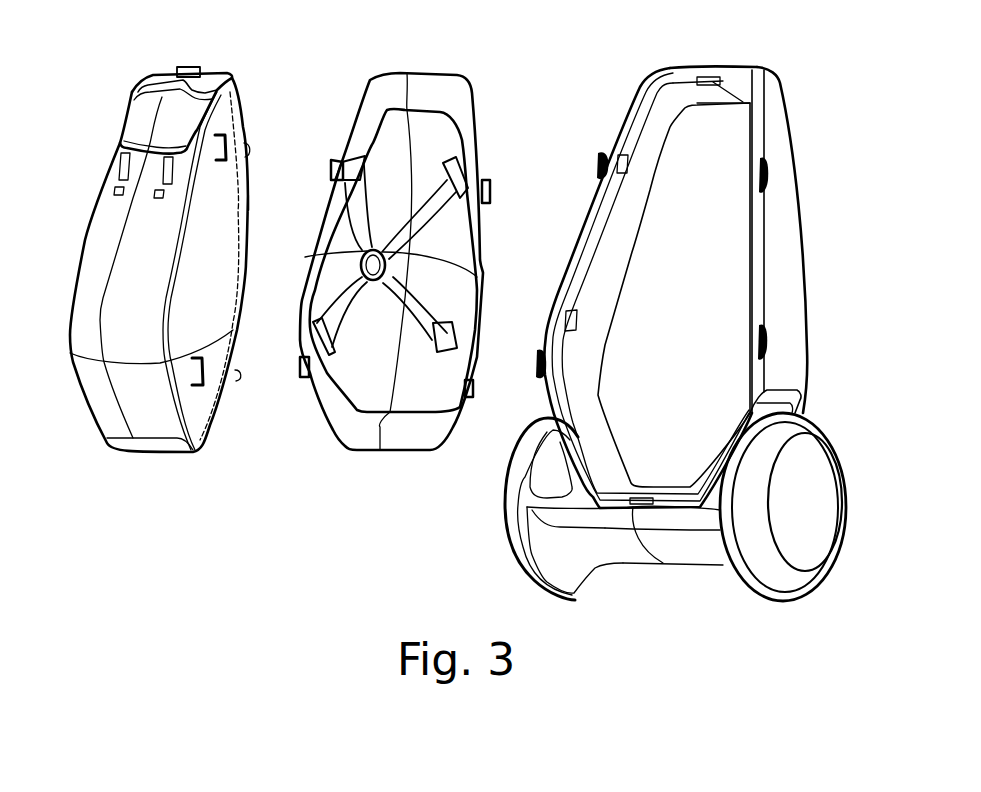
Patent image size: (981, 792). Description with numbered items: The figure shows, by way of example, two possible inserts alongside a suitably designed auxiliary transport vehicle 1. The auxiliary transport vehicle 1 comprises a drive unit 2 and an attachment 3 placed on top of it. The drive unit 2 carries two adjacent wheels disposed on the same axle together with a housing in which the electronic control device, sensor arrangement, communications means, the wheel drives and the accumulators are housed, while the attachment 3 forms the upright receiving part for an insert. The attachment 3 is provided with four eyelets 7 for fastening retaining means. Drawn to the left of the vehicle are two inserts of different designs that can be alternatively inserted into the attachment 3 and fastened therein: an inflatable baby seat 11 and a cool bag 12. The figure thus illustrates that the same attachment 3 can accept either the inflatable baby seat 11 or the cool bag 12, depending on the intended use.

The auxiliary transport vehicle 1 is at (803, 113).
The drive unit 2 is at (492, 551).
The attachment 3 is at (793, 268).
The eyelets 7 is at (770, 178).
The inflatable baby seat 11 is at (337, 88).
The cool bag 12 is at (125, 85).